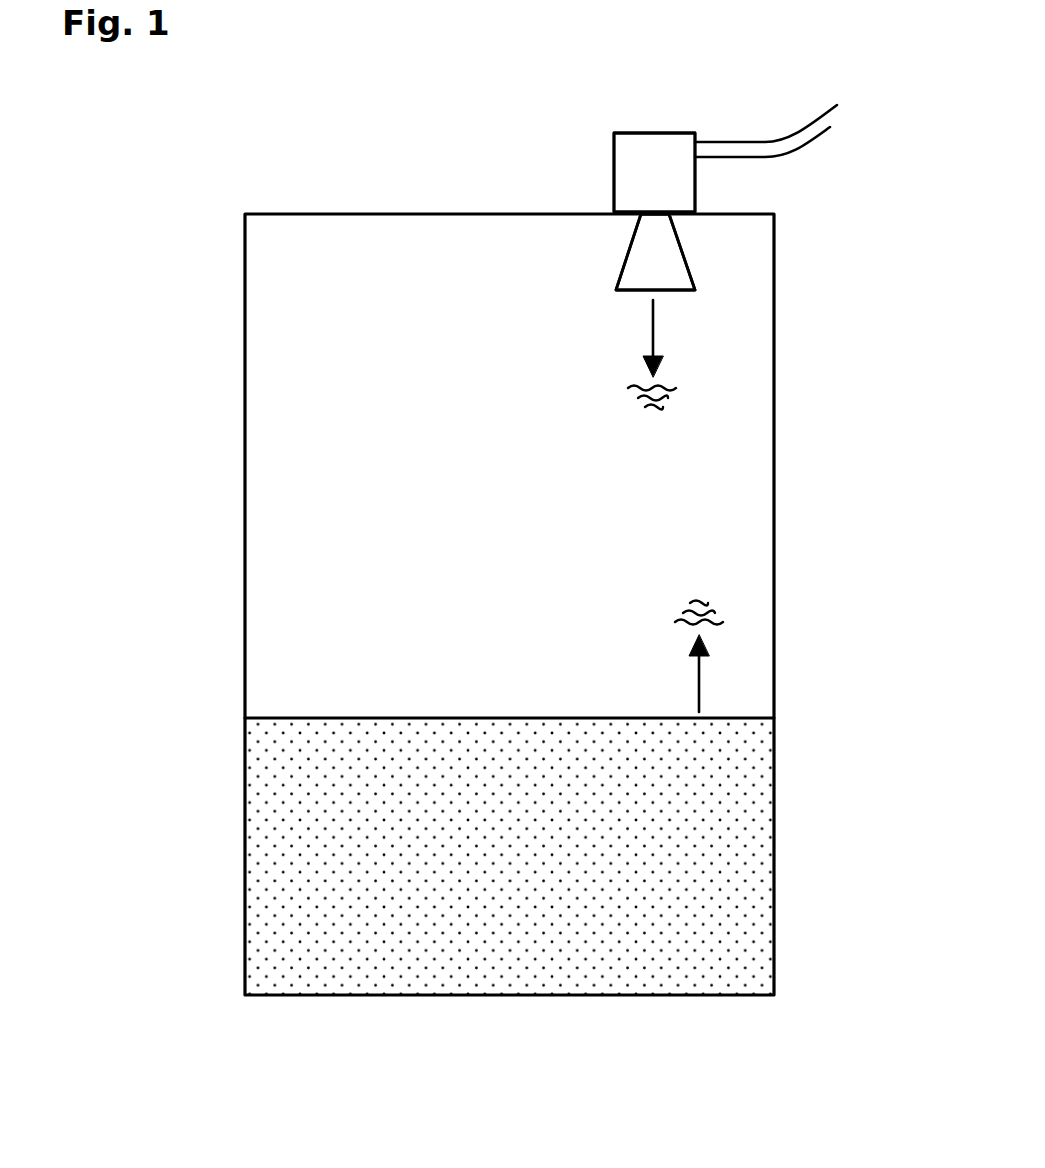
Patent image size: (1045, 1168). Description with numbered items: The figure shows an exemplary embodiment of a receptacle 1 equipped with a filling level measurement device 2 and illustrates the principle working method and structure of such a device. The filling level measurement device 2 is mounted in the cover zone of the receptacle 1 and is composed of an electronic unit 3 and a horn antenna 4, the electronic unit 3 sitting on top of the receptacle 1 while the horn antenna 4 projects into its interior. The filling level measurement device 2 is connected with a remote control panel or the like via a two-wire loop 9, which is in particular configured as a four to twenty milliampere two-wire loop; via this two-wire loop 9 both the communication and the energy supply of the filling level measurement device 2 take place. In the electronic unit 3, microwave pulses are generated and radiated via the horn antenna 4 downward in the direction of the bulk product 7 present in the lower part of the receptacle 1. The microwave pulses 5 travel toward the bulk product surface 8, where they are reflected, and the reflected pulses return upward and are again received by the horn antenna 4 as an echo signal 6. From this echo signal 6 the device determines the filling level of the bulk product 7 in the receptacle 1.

The receptacle 1 is at (777, 473).
The filling level measurement device 2 is at (602, 169).
The electronic unit 3 is at (677, 188).
The horn antenna 4 is at (670, 255).
The microwave pulses 5 is at (675, 382).
The echo signal 6 is at (722, 608).
The bulk product 7 is at (510, 856).
The bulk product surface 8 is at (500, 702).
The two-wire loop 9 is at (728, 142).